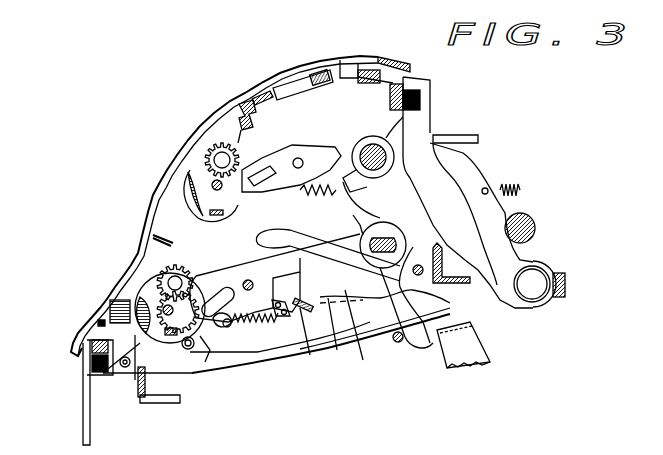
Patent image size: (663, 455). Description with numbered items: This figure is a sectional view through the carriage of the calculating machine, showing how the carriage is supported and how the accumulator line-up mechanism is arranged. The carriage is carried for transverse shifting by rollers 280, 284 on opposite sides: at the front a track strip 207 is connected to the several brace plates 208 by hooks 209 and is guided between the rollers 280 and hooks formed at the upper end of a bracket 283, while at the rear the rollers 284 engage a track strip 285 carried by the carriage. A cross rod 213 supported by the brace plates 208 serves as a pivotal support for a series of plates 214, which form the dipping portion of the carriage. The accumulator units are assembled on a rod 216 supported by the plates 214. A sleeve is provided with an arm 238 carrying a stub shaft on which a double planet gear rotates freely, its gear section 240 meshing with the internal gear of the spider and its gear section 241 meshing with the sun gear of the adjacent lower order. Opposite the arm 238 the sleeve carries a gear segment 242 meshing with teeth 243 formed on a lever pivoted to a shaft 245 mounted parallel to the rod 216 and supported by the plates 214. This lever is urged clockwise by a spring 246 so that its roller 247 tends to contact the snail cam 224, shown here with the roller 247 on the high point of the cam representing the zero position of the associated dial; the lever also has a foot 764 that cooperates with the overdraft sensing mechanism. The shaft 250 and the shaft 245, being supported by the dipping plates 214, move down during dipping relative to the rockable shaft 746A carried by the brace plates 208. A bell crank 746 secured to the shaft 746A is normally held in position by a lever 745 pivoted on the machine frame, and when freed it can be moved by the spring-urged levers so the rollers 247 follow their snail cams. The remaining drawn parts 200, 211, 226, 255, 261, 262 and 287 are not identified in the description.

The housing 200 is at (158, 187).
The brace plates 208 is at (170, 213).
The housing top wall 211 is at (407, 73).
The track strip 285 is at (422, 87).
The rollers 284 is at (420, 97).
The arm 238 is at (232, 262).
The bell crank 746 is at (417, 343).
The rockable shaft 746A is at (400, 237).
The bar 255 is at (423, 268).
The plates 214 is at (430, 283).
The gear section 240 is at (168, 270).
The gear section 241 is at (157, 283).
The rod 216 is at (143, 300).
The snail cam 224 is at (137, 300).
The track strip 207 is at (110, 303).
The hooks 209 is at (107, 323).
The gear segment 242 is at (90, 330).
The rollers 280 is at (90, 367).
The cross rod 213 is at (103, 370).
The bracket 283 is at (82, 400).
The bracket 287 is at (140, 395).
The strip 226 is at (159, 382).
The roller 247 is at (200, 380).
The foot 764 is at (220, 380).
The teeth 243 is at (248, 290).
The spring 246 is at (278, 315).
The shaft 245 is at (272, 320).
The screw 261 is at (307, 323).
The arm 262 is at (328, 310).
The shaft 250 is at (358, 345).
The lever 745 is at (470, 340).